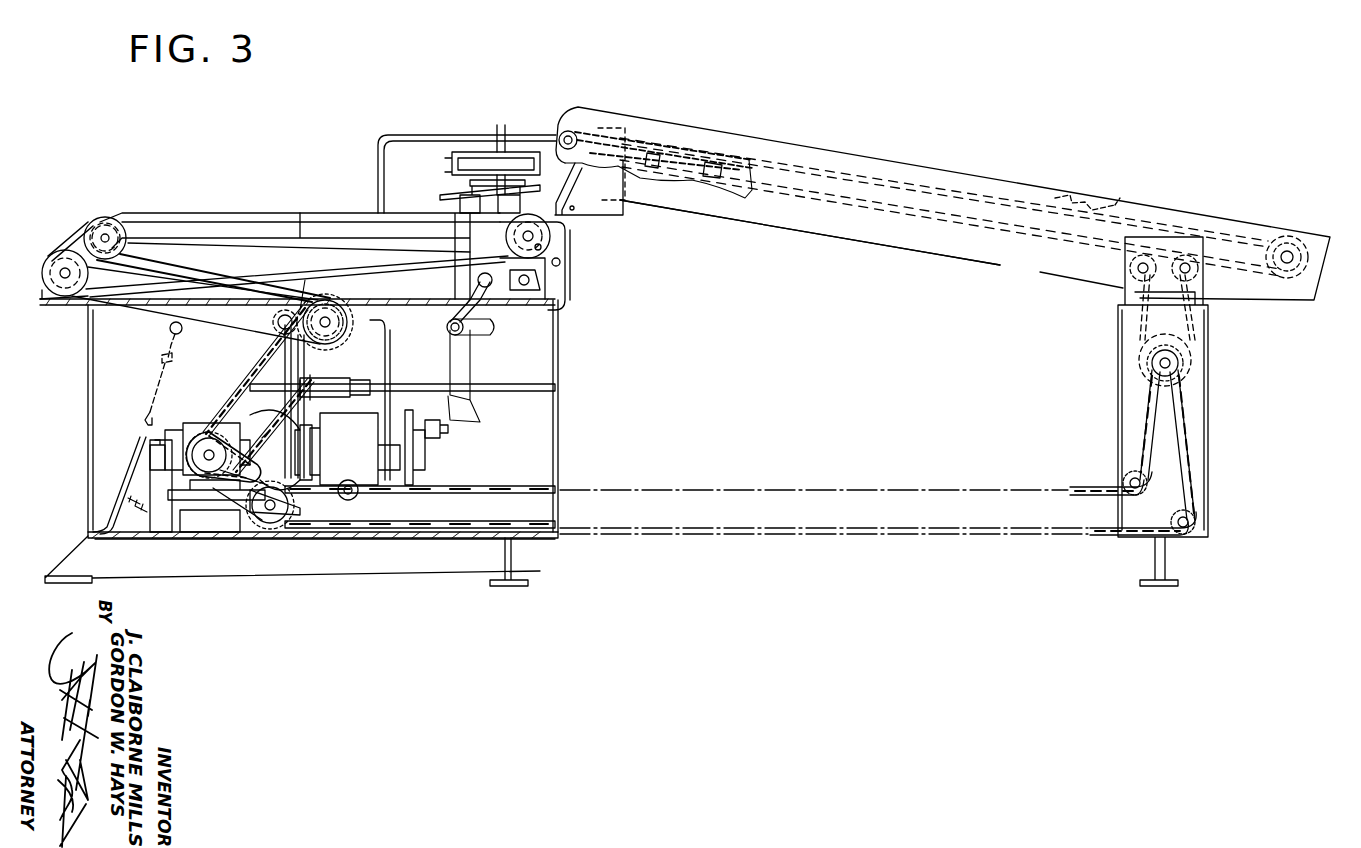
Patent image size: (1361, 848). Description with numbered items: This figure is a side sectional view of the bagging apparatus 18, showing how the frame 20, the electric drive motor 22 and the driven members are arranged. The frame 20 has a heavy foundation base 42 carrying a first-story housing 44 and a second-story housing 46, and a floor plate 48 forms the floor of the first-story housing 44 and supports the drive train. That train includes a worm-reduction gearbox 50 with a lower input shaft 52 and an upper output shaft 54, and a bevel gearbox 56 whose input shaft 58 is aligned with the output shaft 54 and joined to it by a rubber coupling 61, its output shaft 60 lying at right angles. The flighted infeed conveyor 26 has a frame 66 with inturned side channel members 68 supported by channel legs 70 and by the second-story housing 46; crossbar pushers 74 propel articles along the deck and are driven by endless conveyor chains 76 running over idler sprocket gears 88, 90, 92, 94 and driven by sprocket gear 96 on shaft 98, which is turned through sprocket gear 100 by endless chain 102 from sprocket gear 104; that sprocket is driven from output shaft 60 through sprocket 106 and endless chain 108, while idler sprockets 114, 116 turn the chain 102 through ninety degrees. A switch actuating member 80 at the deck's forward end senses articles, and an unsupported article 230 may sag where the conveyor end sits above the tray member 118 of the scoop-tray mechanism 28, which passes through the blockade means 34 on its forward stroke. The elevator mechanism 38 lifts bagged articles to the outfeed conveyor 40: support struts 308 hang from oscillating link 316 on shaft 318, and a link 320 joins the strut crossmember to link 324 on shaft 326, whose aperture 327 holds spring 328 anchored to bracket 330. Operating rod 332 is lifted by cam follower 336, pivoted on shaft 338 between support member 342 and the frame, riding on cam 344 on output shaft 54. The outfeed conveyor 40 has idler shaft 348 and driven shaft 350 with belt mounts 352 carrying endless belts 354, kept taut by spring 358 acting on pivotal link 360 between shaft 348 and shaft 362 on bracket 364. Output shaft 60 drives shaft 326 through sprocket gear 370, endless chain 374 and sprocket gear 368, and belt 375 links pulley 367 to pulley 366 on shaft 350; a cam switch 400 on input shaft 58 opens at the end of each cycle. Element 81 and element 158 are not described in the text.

The bagging apparatus 18 is at (543, 548).
The frame 20 is at (552, 470).
The electric drive motor 22 is at (248, 408).
The flighted infeed conveyor 26 is at (1006, 170).
The scoop-tray mechanism 28 is at (456, 158).
The blockade means 34 is at (515, 156).
The elevator mechanism 38 is at (442, 187).
The outfeed conveyor 40 is at (250, 205).
The foundation base 42 is at (262, 574).
The first-story housing 44 is at (78, 398).
The second-story housing 46 is at (72, 318).
The floor plate 48 is at (455, 539).
The worm-reduction gearbox 50 is at (372, 417).
The input shaft 52 is at (350, 500).
The output shaft 54 is at (427, 455).
The bevel gearbox 56 is at (192, 426).
The input shaft 58 is at (148, 455).
The output shaft 60 is at (210, 474).
The rubber coupling 61 is at (268, 430).
The frame 66 is at (1058, 286).
The side channel members 68 is at (934, 252).
The channel legs 70 is at (1208, 394).
The crossbar pushers 74 is at (1123, 204).
The endless conveyor chains 76 is at (682, 145).
The switch actuating member 80 is at (648, 170).
The chain block 81 is at (652, 164).
The idler sprocket gear 88 is at (578, 132).
The idler sprocket gear 90 is at (1298, 258).
The idler sprocket gear 92 is at (1137, 269).
The idler sprocket gear 94 is at (1190, 272).
The sprocket gear 96 is at (1205, 340).
The shaft 98 is at (1180, 365).
The sprocket gear 100 is at (1158, 378).
The endless chain 102 is at (1080, 486).
The sprocket gear 104 is at (274, 520).
The sprocket 106 is at (228, 505).
The endless chain 108 is at (252, 530).
The idler sprocket 114 is at (1128, 475).
The idler sprocket 116 is at (1196, 522).
The tray member 118 is at (445, 155).
The coupling 158 is at (442, 428).
The unsupported article 230 is at (1078, 200).
The support strut 308 is at (480, 258).
The oscillating link 316 is at (258, 250).
The shaft 318 is at (112, 234).
The link 320 is at (472, 300).
The link 324 is at (470, 330).
The shaft 326 is at (327, 318).
The aperture 327 is at (169, 331).
The spring 328 is at (160, 358).
The bracket 330 is at (88, 515).
The operating rod 332 is at (270, 360).
The cam follower 336 is at (318, 397).
The shaft 338 is at (502, 383).
The support member 342 is at (388, 346).
The cam 344 is at (314, 433).
The idler shaft 348 is at (533, 237).
The driven shaft 350 is at (62, 266).
The belt mounts 352 is at (100, 222).
The endless belts 354 is at (303, 214).
The spring 358 is at (558, 262).
The pivotal link 360 is at (540, 276).
The shaft 362 is at (545, 286).
The bracket 364 is at (562, 310).
The pulley 366 is at (92, 212).
The pulley 367 is at (353, 322).
The sprocket gear 368 is at (340, 340).
The sprocket gear 370 is at (212, 418).
The endless chain 374 is at (215, 402).
The belt 375 is at (150, 272).
The cam switch 400 is at (140, 475).